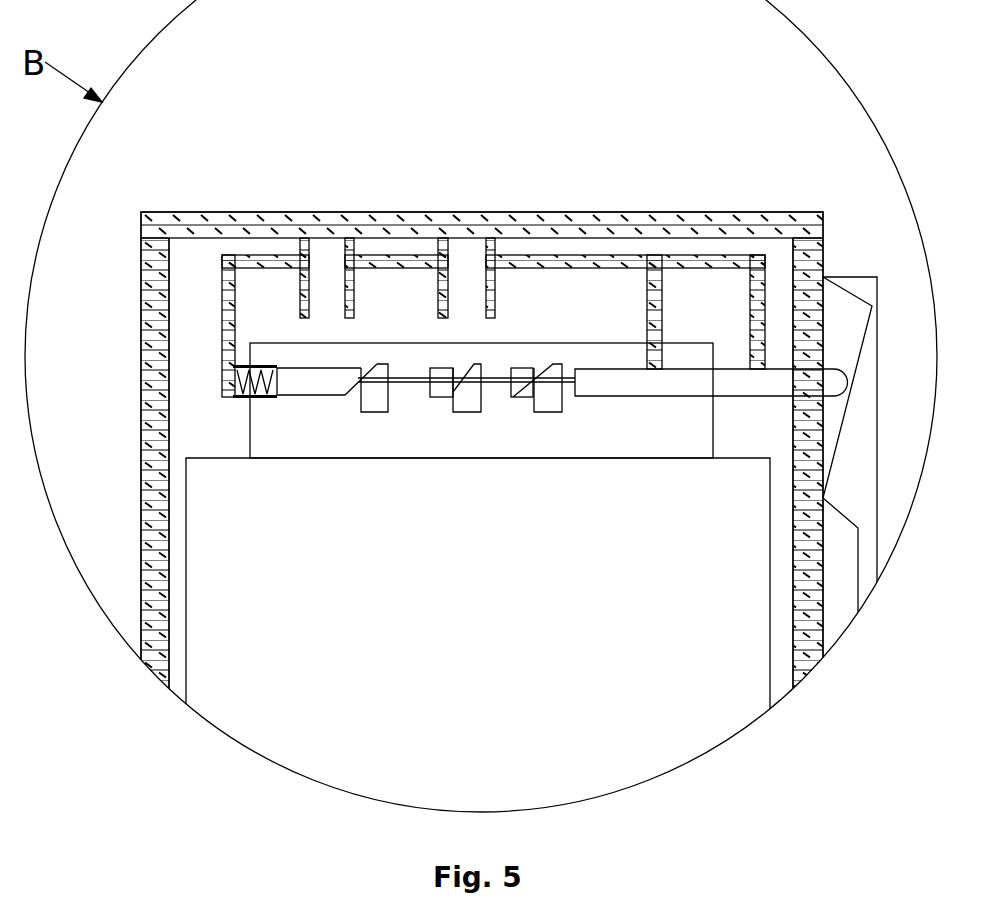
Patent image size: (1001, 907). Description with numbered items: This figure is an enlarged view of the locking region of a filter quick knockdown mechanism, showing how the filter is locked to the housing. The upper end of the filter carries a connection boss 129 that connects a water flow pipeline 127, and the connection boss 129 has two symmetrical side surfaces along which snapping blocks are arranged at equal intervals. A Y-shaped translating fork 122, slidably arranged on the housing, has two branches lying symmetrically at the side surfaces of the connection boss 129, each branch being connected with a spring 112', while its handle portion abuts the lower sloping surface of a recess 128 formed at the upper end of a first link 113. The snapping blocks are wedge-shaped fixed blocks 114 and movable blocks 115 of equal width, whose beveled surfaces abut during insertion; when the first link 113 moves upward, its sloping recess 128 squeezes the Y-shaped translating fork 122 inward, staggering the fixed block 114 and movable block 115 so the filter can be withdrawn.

The water flow pipeline 127 is at (467, 250).
The connection boss 129 is at (600, 363).
The spring 112' is at (296, 412).
The Y-shaped translating fork 122 is at (665, 387).
The fixed block 114 is at (547, 413).
The movable block 115 is at (433, 387).
The recess 128 is at (848, 317).
The first link 113 is at (877, 340).